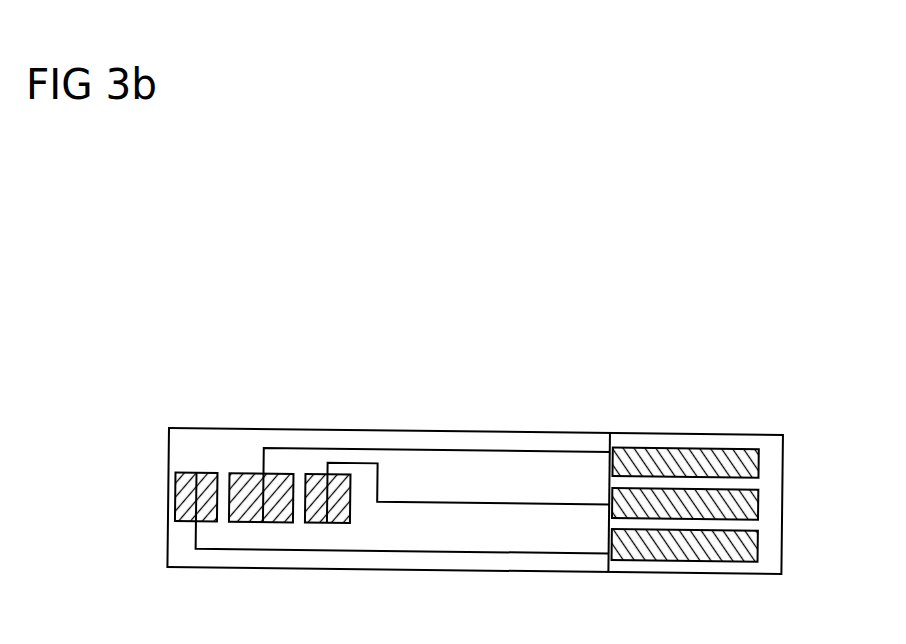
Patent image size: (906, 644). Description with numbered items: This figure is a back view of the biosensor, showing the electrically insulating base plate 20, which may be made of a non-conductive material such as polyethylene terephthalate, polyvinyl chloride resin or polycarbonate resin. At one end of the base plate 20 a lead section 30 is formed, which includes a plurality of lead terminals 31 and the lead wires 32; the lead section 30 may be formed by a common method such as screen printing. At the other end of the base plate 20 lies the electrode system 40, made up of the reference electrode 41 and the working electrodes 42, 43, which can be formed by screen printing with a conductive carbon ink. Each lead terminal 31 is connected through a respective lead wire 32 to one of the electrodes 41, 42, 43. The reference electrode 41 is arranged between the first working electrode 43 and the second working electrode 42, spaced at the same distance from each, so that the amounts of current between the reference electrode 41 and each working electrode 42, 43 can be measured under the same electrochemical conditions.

The electrically insulating base plate 20 is at (398, 428).
The lead section 30 is at (672, 421).
The lead terminals 31 is at (651, 448).
The lead wires 32 is at (569, 448).
The electrode system 40 is at (264, 398).
The reference electrode 41 is at (245, 473).
The second working electrode 42 is at (328, 425).
The first working electrode 43 is at (192, 473).